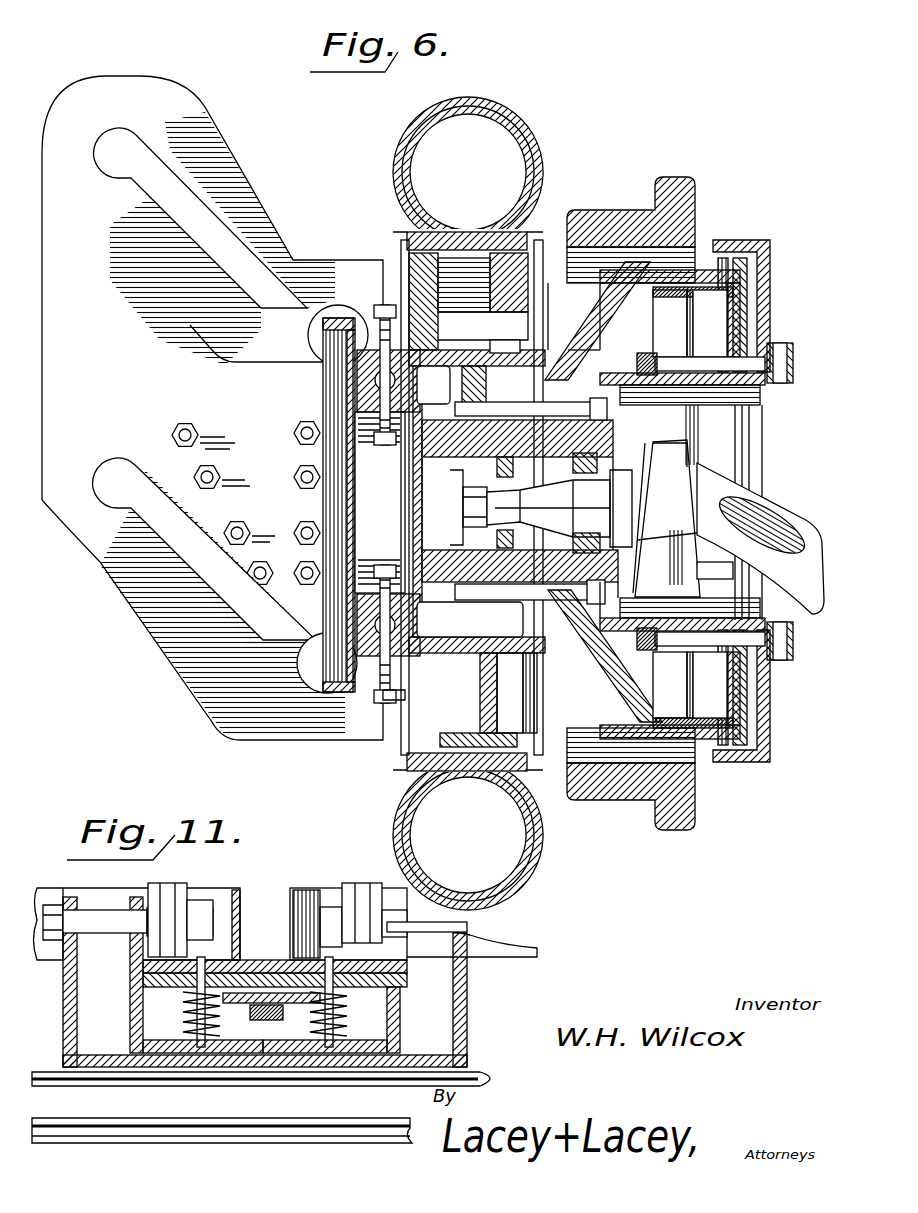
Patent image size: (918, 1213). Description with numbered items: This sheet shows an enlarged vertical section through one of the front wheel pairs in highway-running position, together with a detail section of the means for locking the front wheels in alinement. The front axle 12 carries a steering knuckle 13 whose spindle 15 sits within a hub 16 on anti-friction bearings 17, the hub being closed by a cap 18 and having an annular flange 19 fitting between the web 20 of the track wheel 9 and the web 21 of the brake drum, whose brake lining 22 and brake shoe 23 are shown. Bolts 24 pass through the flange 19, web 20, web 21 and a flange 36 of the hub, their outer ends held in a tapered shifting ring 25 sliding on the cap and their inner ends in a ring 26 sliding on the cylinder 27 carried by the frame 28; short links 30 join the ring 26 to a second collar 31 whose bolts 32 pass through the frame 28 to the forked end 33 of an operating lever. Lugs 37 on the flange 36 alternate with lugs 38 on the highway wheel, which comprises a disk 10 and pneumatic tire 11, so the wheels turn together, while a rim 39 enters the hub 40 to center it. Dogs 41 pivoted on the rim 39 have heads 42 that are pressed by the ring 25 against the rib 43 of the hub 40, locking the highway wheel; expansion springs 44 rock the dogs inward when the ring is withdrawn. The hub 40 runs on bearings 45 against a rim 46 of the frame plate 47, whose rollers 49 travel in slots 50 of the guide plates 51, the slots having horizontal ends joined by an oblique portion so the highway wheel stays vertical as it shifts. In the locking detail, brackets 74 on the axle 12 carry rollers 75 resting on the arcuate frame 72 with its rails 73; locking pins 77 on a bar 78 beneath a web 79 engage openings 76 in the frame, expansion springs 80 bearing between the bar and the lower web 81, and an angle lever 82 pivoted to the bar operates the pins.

In FIG. 6, the track wheel 9 is at (598, 212).
In FIG. 6, the disk 10 is at (482, 705).
In FIG. 6, the pneumatic tire 11 is at (530, 852).
In FIG. 6, the front axle 12 is at (775, 528).
In FIG. 11, the front axle 12 is at (330, 1118).
In FIG. 6, the steering knuckle 13 is at (740, 430).
In FIG. 6, the spindle 15 is at (559, 508).
In FIG. 6, the hub 16 is at (459, 507).
In FIG. 6, the anti-friction bearings 17 is at (628, 465).
In FIG. 6, the cap 18 is at (462, 520).
In FIG. 6, the annular flange 19 is at (581, 359).
In FIG. 6, the web 20 is at (621, 505).
In FIG. 6, the web 21 is at (601, 316).
In FIG. 6, the brake lining 22 is at (758, 297).
In FIG. 6, the brake shoe 23 is at (748, 318).
In FIG. 6, the bolts 24 is at (605, 420).
In FIG. 6, the shifting ring 25 is at (380, 502).
In FIG. 6, the ring 26 is at (600, 640).
In FIG. 6, the cylinder 27 is at (697, 626).
In FIG. 6, the frame 28 is at (767, 345).
In FIG. 6, the links 30 is at (693, 507).
In FIG. 6, the ring or collar 31 is at (640, 650).
In FIG. 6, the bolts 32 is at (705, 367).
In FIG. 6, the forked end 33 is at (793, 368).
In FIG. 6, the flange or collar 36 is at (565, 322).
In FIG. 6, the lugs or blocks 37 is at (510, 693).
In FIG. 6, the lugs 38 is at (480, 294).
In FIG. 6, the rim 39 is at (433, 385).
In FIG. 6, the hub 40 is at (483, 340).
In FIG. 6, the dogs or latches 41 is at (463, 395).
In FIG. 6, the heads 42 is at (470, 619).
In FIG. 6, the rib or annular enlargement 43 is at (395, 692).
In FIG. 6, the expansion springs 44 is at (483, 494).
In FIG. 6, the anti-friction bearings 45 is at (382, 381).
In FIG. 6, the rim 46 is at (385, 592).
In FIG. 6, the frame plate 47 is at (325, 508).
In FIG. 6, the rollers 49 is at (310, 333).
In FIG. 6, the slots 50 is at (204, 384).
In FIG. 6, the guide and supporting plates 51 is at (212, 408).
In FIG. 11, the frame 72 is at (53, 955).
In FIG. 11, the flanges or rails 73 is at (292, 924).
In FIG. 11, the brackets 74 is at (470, 1040).
In FIG. 11, the rollers 75 is at (180, 892).
In FIG. 11, the vertical openings 76 is at (292, 950).
In FIG. 11, the locking pins 77 is at (269, 1002).
In FIG. 11, the bar 78 is at (271, 1011).
In FIG. 11, the web 79 is at (395, 1000).
In FIG. 11, the expansion springs 80 is at (290, 1053).
In FIG. 11, the lower web 81 is at (380, 1055).
In FIG. 11, the angle lever 82 is at (263, 1021).